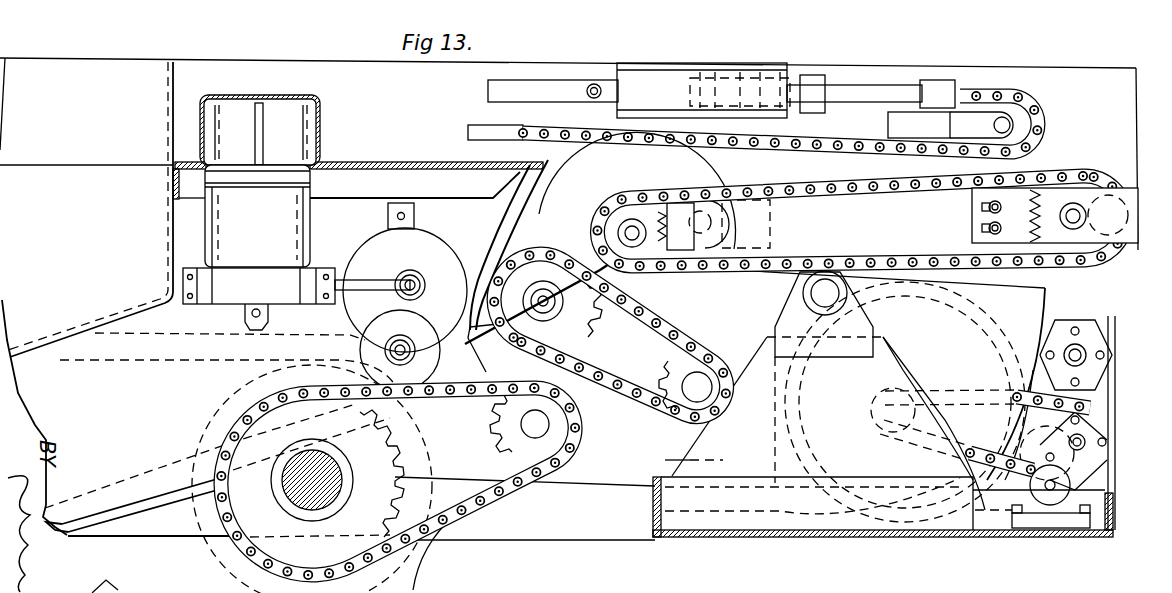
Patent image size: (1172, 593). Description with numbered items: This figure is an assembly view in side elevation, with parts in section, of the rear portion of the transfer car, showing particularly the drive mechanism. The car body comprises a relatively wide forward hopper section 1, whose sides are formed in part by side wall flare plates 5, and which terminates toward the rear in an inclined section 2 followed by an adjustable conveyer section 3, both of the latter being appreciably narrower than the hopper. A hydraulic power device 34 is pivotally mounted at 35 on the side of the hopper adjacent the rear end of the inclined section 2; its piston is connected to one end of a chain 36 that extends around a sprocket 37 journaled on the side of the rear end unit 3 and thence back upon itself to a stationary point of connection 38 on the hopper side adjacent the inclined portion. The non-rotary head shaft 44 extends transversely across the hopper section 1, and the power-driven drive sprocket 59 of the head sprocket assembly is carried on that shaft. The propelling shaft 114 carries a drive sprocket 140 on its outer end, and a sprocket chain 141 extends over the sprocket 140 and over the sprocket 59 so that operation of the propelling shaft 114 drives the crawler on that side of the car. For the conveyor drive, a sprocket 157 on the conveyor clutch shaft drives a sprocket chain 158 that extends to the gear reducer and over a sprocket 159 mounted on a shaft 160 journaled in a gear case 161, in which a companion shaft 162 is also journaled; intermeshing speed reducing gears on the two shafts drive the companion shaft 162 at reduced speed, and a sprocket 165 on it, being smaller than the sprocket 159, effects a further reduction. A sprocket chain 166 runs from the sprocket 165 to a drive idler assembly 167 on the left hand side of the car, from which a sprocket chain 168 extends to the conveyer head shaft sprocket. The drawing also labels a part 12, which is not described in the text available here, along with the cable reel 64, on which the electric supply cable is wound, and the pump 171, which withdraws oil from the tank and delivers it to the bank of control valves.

The hopper section 1 is at (106, 70).
The inclined section 2 is at (142, 510).
The adjustable conveyer section 3 is at (1128, 84).
The side wall flare plates 5 is at (798, 590).
The bracket 12 is at (738, 205).
The hydraulic power device 34 is at (660, 72).
The pivotal mounting 35 is at (594, 86).
The chain 36 is at (1022, 96).
The sprocket 37 is at (978, 110).
The stationary point of connection 38 is at (527, 138).
The head shaft 44 is at (335, 500).
The drive sprocket 59 is at (420, 553).
The cable reel 64 is at (668, 455).
The propelling shaft 114 is at (553, 437).
The drive sprocket 140 is at (503, 448).
The sprocket chain 141 is at (488, 496).
The sprocket 157 is at (678, 380).
The sprocket chain 158 is at (612, 402).
The sprocket 159 is at (592, 338).
The shaft 160 is at (530, 292).
The gear case 161 is at (525, 222).
The companion shaft 162 is at (628, 218).
The sprocket 165 is at (648, 216).
The sprocket chain 166 is at (913, 192).
The drive idler assembly 167 is at (1050, 255).
The sprocket chain 168 is at (1118, 262).
The pump 171 is at (1060, 338).